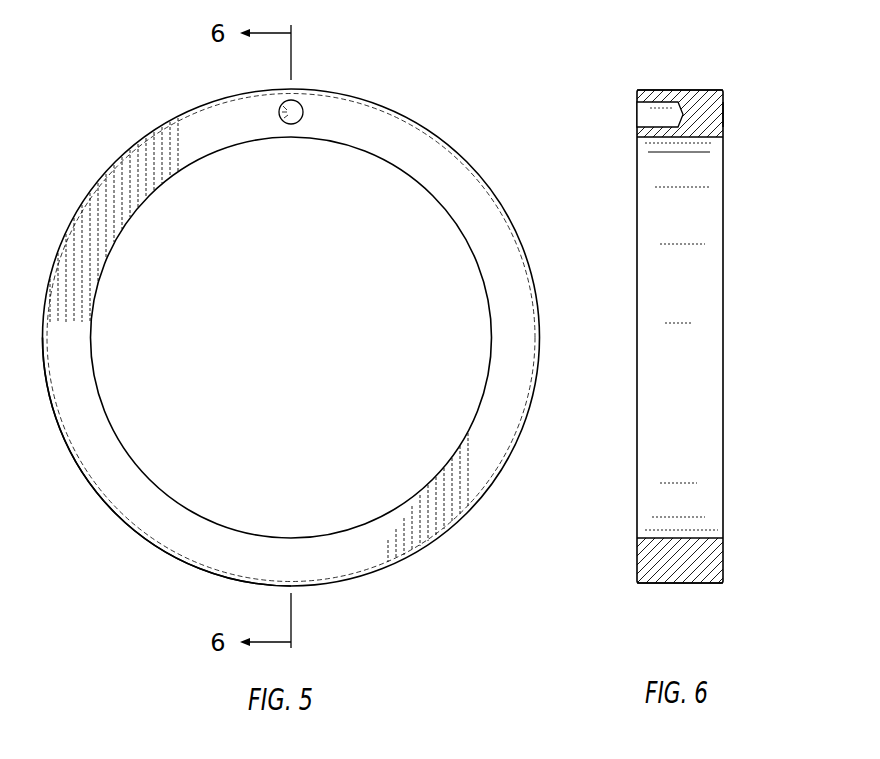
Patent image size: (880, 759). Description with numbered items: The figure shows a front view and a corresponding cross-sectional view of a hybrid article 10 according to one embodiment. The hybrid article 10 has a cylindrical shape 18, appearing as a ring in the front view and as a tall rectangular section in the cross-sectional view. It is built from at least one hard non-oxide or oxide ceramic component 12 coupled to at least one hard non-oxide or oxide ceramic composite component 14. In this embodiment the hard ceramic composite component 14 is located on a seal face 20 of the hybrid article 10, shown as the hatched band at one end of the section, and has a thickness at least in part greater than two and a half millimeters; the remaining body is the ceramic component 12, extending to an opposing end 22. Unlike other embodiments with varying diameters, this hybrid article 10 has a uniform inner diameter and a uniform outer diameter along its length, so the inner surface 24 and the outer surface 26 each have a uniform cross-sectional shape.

In FIG. 5, the hybrid article 10 is at (462, 138).
In FIG. 6, the hybrid article 10 is at (808, 236).
In FIG. 5, the hard non-oxide or oxide ceramic component 12 is at (188, 137).
In FIG. 6, the hard non-oxide or oxide ceramic component 12 is at (652, 90).
In FIG. 6, the hard non-oxide or oxide ceramic composite component 14 is at (718, 90).
In FIG. 5, the cylindrical shape 18 is at (438, 537).
In FIG. 6, the seal face 20 is at (723, 115).
In FIG. 5, the opposing end 22 is at (518, 363).
In FIG. 6, the opposing end 22 is at (637, 552).
In FIG. 5, the inner surface 24 is at (148, 482).
In FIG. 6, the inner surface 24 is at (684, 137).
In FIG. 5, the outer surface 26 is at (138, 535).
In FIG. 6, the outer surface 26 is at (660, 584).